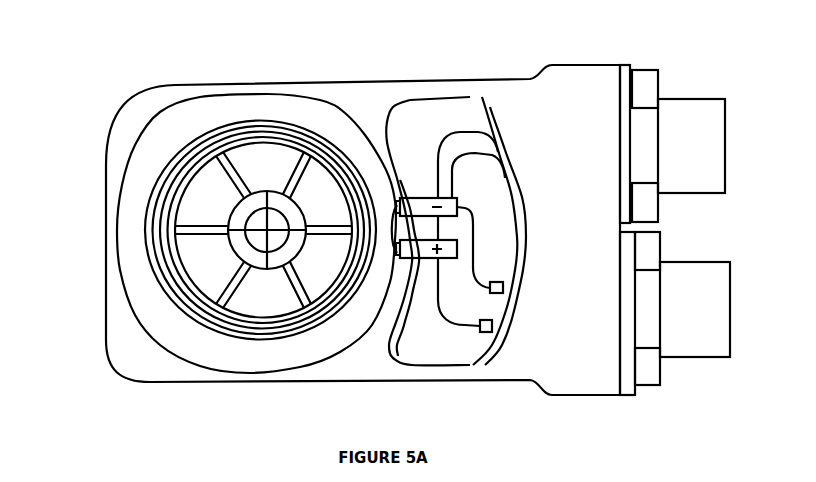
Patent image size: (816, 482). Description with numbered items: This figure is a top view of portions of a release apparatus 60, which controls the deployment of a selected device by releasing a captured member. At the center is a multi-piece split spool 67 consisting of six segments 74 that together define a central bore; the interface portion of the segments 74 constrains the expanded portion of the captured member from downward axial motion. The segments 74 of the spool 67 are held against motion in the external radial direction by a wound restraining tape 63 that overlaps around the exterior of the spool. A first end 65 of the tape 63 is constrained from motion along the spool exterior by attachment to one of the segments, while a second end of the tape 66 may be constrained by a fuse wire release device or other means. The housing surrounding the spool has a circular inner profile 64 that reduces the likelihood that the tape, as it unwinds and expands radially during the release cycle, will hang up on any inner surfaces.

The release apparatus 60 is at (411, 83).
The wound restraining tape 63 is at (265, 340).
The circular inner profile 64 is at (122, 290).
The first end of the tape 65 is at (255, 272).
The second end of the tape 66 is at (397, 257).
The multi-piece split spool 67 is at (185, 192).
The segments 74 is at (250, 148).